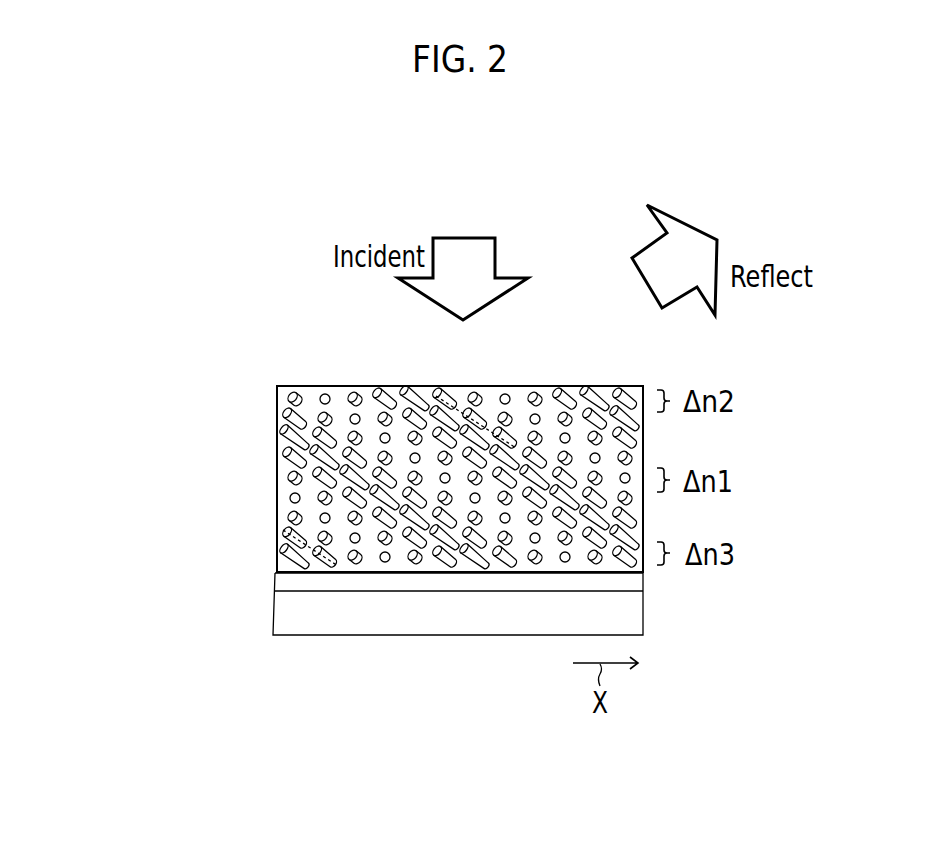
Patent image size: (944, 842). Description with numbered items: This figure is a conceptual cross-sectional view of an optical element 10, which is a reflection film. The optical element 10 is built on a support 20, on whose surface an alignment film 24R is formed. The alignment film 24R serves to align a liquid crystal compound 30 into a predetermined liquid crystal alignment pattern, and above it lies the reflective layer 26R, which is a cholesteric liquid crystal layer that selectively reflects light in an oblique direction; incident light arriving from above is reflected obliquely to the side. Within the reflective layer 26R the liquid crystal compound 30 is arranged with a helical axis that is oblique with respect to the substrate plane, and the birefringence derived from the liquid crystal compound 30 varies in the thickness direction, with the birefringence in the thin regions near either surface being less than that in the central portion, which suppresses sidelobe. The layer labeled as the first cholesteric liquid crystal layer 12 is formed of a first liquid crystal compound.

The optical element 10 is at (188, 398).
The first cholesteric liquid crystal layer 12 is at (276, 366).
The support 20 is at (635, 608).
The alignment film 24R is at (635, 581).
The reflective layer 26R is at (277, 488).
The liquid crystal compound 30 is at (296, 457).